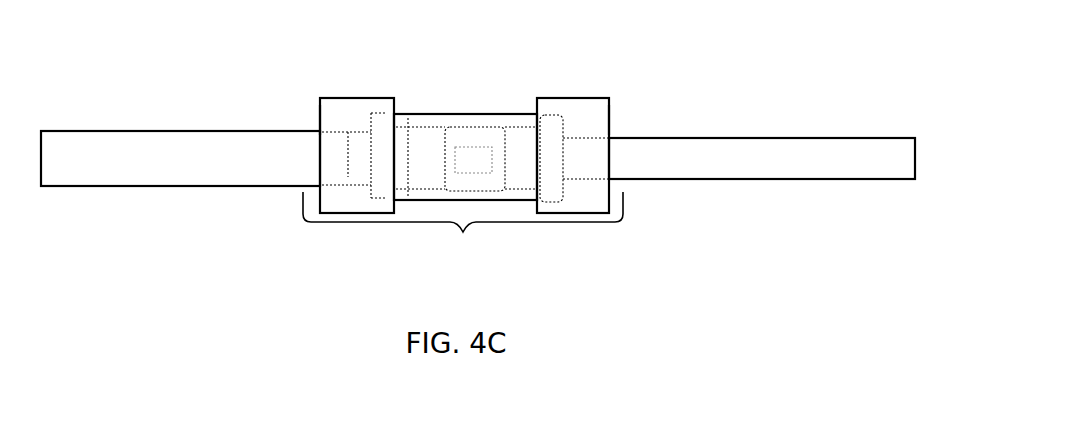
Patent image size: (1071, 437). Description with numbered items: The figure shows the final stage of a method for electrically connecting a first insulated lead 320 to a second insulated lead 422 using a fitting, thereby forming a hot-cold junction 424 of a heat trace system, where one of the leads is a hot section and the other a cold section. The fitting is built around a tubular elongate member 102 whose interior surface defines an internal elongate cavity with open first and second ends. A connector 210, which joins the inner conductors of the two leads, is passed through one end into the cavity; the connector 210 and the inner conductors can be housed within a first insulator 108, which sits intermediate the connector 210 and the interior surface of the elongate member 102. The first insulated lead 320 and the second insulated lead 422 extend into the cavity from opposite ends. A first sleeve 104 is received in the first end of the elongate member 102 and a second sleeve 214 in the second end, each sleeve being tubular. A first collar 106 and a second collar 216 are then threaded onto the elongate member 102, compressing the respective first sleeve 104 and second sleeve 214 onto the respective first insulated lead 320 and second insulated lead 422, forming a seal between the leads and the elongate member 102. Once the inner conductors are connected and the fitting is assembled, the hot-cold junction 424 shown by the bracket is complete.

The elongate member 102 is at (413, 114).
The first sleeve 104 is at (361, 128).
The first collar 106 is at (320, 120).
The first insulator 108 is at (488, 127).
The connector 210 is at (468, 148).
The second sleeve 214 is at (520, 138).
The second collar 216 is at (610, 118).
The first insulated lead 320 is at (136, 158).
The second insulated lead 422 is at (871, 158).
The hot-cold junction 424 is at (463, 232).